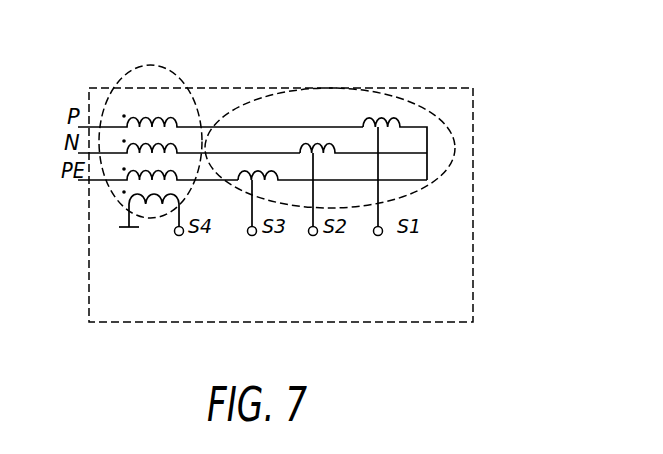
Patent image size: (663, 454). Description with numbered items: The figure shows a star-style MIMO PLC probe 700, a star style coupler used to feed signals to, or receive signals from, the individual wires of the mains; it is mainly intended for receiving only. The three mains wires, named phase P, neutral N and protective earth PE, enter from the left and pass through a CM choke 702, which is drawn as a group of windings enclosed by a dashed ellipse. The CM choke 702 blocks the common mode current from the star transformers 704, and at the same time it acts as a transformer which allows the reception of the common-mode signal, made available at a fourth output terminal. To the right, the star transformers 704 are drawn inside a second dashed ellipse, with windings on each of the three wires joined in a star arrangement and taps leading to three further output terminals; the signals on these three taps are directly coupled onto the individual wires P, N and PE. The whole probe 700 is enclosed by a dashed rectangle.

The star-style MIMO PLC probe 700 is at (473, 190).
The CM choke 702 is at (125, 73).
The star transformers 704 is at (342, 88).